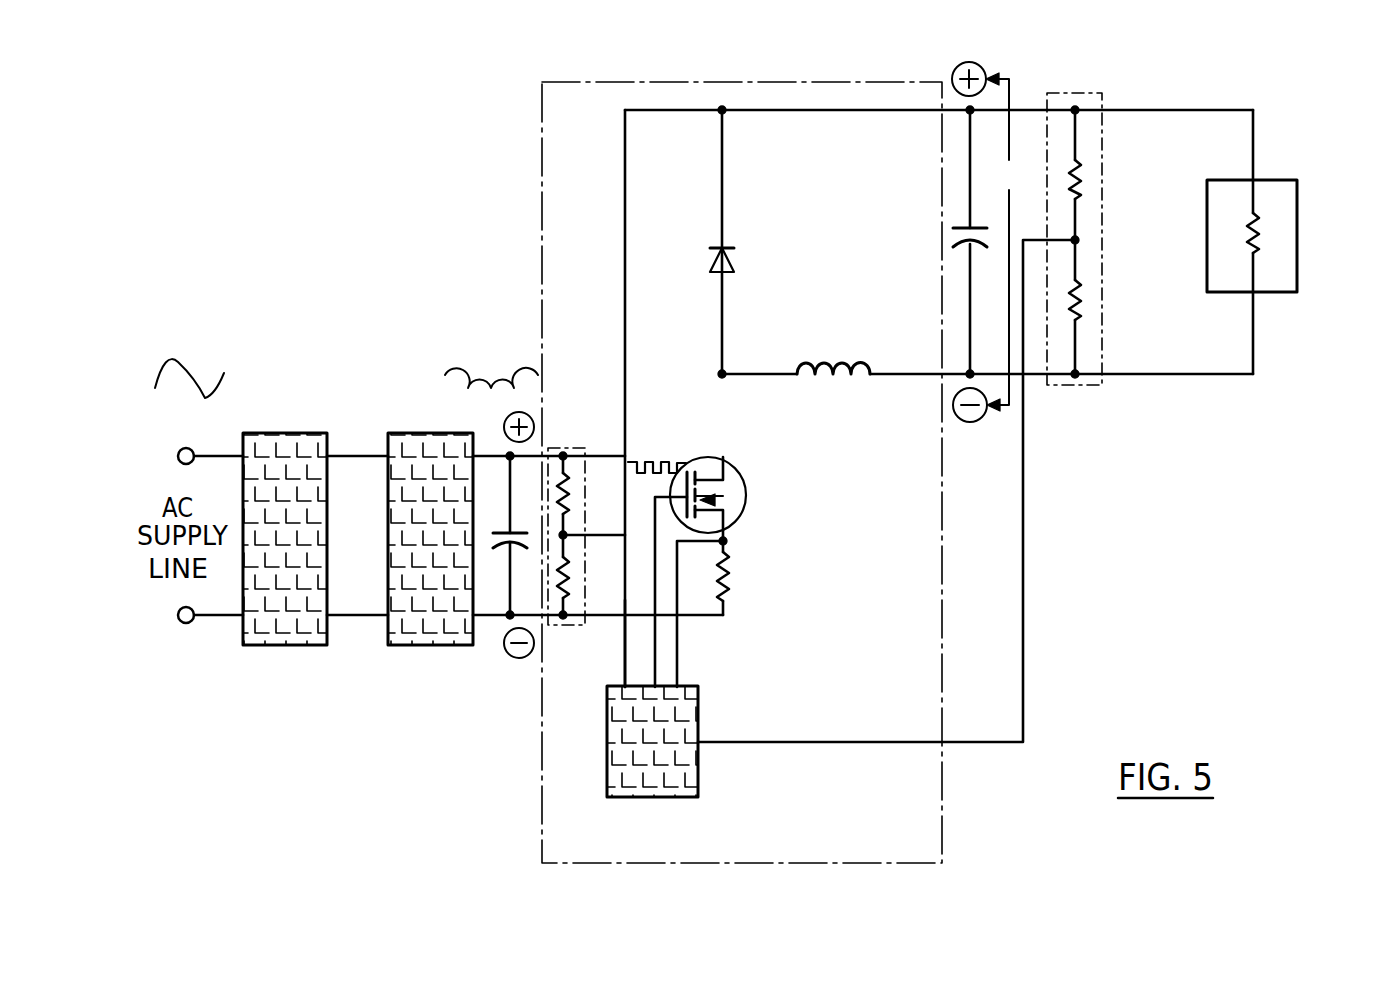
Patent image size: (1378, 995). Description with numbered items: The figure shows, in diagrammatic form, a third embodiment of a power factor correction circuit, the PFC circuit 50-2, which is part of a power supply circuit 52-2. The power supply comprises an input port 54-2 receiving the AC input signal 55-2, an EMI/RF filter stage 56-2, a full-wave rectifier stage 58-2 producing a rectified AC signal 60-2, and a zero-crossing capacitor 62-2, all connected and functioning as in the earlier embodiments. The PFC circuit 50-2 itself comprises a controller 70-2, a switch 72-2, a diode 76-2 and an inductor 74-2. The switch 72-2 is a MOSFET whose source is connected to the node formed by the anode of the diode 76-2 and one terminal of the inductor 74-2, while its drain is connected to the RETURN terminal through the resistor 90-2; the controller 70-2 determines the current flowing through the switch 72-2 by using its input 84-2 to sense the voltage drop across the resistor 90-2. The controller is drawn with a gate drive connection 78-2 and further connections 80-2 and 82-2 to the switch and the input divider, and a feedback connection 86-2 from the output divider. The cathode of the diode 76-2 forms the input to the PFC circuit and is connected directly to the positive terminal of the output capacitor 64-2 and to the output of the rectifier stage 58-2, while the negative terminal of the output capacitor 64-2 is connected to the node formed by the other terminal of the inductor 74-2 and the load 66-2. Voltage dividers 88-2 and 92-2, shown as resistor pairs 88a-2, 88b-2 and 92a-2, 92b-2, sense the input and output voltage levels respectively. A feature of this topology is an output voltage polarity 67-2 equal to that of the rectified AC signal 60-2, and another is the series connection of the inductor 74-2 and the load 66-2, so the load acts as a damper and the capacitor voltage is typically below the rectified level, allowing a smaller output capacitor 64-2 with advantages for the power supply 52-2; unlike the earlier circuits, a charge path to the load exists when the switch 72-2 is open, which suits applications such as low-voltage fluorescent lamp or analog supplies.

The PFC circuit 50-2 is at (542, 95).
The power supply circuit 52-2 is at (478, 750).
The input port 54-2 is at (186, 447).
The input signal 55-2 is at (185, 365).
The EMI/RF filter stage 56-2 is at (296, 433).
The full-wave rectifier stage 58-2 is at (433, 433).
The rectified AC signal 60-2 is at (470, 375).
The zero-crossing capacitor 62-2 is at (532, 545).
The output capacitor 64-2 is at (962, 240).
The load 66-2 is at (1288, 180).
The output voltage polarity 67-2 is at (992, 242).
The controller 70-2 is at (693, 683).
The switch 72-2 is at (697, 458).
The inductor 74-2 is at (825, 357).
The diode 76-2 is at (730, 250).
The gate drive line 78-2 is at (656, 598).
The gate resistor 80-2 is at (650, 462).
The voltage sense line 82-2 is at (625, 665).
The input 84-2 is at (680, 648).
The feedback line 86-2 is at (818, 742).
The voltage divider 88-2 is at (600, 521).
The divider resistor 88a-2 is at (568, 490).
The divider resistor 88b-2 is at (572, 580).
The resistor 90-2 is at (728, 565).
The voltage divider 92-2 is at (1116, 220).
The divider resistor 92a-2 is at (1082, 160).
The divider resistor 92b-2 is at (1085, 310).